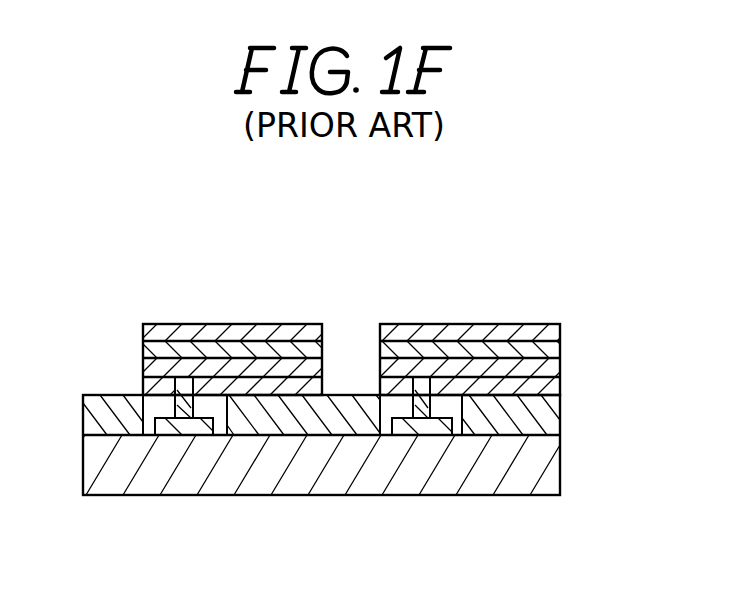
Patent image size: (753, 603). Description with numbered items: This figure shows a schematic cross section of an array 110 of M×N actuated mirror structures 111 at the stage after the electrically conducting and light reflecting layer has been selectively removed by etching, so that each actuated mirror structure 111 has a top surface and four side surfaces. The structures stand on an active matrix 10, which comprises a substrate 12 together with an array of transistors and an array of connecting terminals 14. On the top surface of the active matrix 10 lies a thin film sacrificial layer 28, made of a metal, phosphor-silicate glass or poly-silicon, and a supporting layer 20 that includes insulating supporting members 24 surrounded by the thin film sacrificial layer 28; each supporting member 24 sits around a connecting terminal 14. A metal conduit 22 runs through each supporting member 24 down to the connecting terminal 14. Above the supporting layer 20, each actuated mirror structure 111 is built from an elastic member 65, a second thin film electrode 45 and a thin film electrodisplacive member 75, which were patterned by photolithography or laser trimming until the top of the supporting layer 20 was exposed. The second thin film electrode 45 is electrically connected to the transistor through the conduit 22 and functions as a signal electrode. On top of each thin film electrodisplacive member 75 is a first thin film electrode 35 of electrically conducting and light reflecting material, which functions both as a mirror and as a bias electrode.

The array of actuated mirror structures 110 is at (606, 176).
The actuated mirror structure 111 is at (323, 225).
The active matrix 10 is at (72, 418).
The substrate 12 is at (290, 486).
The connecting terminal 14 is at (187, 430).
The supporting layer 20 is at (336, 402).
The conduit 22 is at (185, 382).
The supporting member 24 is at (213, 416).
The thin film sacrificial layer 28 is at (543, 413).
The first thin film electrode 35 is at (550, 325).
The second thin film electrode 45 is at (550, 370).
The elastic member 65 is at (545, 386).
The thin film electrodisplacive member 75 is at (549, 350).